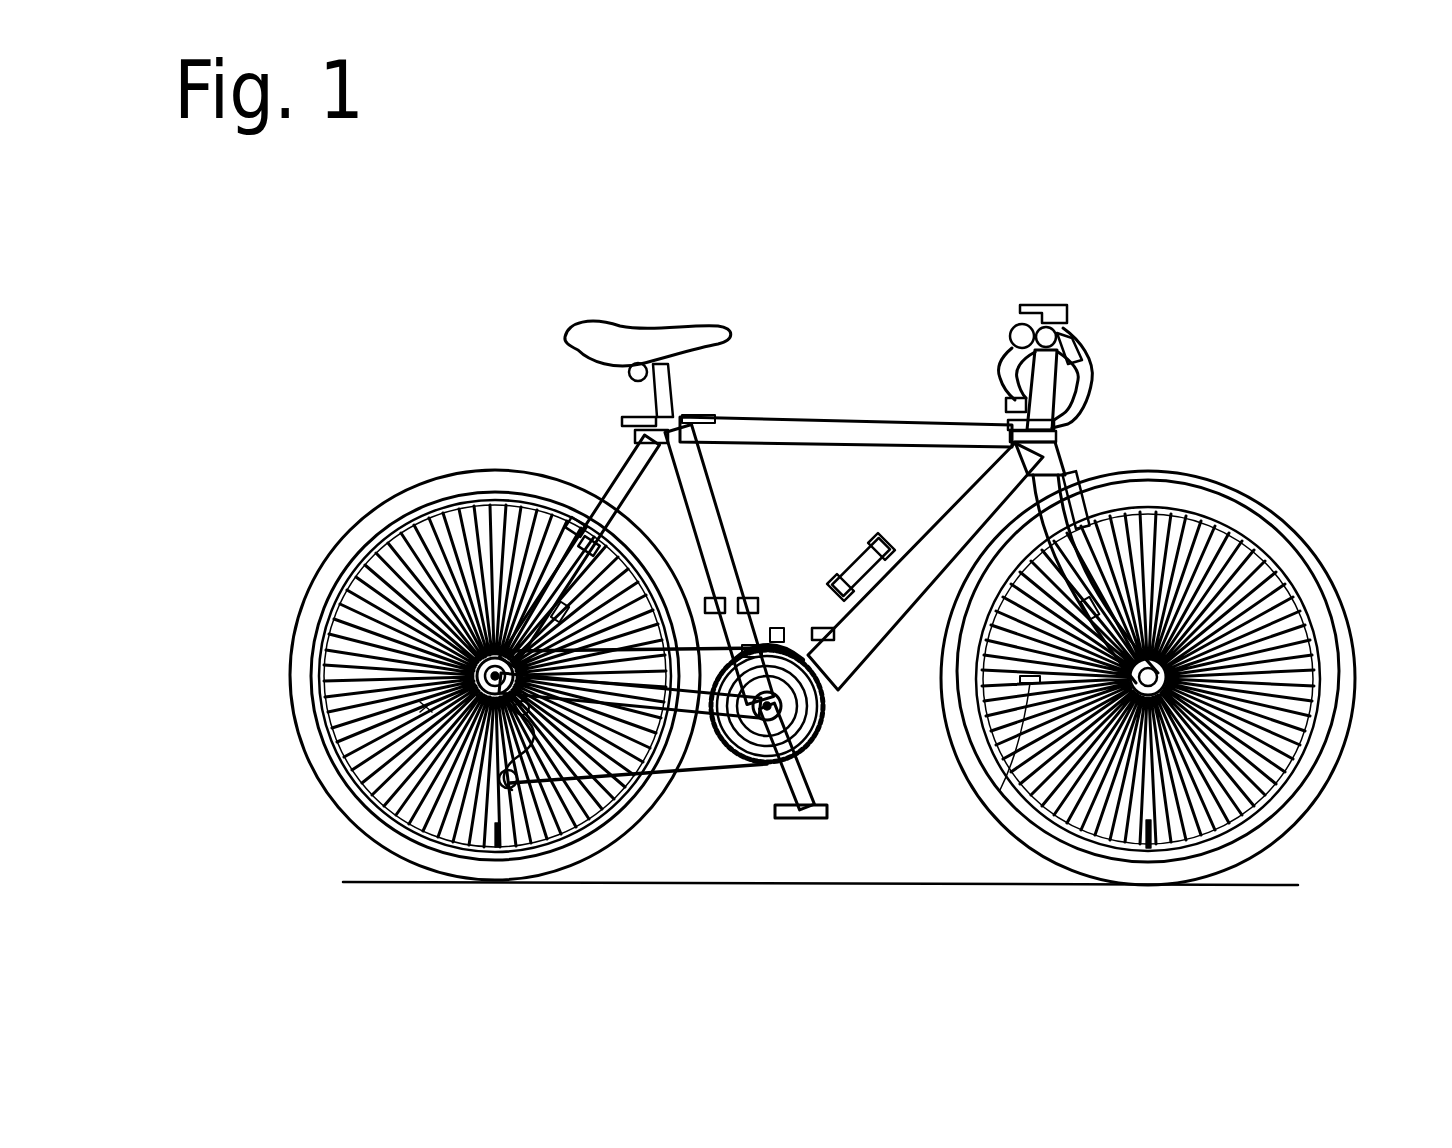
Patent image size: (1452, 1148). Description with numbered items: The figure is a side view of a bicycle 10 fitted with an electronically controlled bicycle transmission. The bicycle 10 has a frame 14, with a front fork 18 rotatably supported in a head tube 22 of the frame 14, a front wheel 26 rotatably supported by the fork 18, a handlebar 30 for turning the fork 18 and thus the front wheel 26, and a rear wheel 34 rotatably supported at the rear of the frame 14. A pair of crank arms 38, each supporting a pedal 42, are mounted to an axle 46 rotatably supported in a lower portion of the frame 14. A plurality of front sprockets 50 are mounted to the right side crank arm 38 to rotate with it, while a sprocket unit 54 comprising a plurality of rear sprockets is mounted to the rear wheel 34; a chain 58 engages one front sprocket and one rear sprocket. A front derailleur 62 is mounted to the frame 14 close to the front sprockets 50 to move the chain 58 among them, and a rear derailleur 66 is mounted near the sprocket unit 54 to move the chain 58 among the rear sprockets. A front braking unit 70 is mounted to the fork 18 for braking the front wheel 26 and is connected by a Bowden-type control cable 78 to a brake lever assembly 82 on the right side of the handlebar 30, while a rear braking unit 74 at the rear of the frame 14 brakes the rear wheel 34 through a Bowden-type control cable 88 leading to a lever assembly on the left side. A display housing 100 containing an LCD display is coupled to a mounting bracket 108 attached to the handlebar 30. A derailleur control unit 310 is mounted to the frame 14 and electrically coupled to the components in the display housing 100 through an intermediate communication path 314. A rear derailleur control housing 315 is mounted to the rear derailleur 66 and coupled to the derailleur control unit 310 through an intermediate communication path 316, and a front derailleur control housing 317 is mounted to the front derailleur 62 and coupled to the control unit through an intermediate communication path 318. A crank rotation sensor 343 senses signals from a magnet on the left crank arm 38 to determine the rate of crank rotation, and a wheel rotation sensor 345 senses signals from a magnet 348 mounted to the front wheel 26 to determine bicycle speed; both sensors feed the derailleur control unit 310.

The bicycle 10 is at (721, 175).
The frame 14 is at (808, 418).
The front fork 18 is at (1078, 488).
The head tube 22 is at (1003, 403).
The front wheel 26 is at (1330, 585).
The handlebar 30 is at (1010, 333).
The rear wheel 34 is at (340, 550).
The crank arm 38 is at (800, 775).
The pedal 42 is at (793, 820).
The axle 46 is at (780, 708).
The front sprockets 50 is at (822, 690).
The sprocket unit 54 is at (337, 632).
The chain 58 is at (705, 778).
The front derailleur 62 is at (770, 640).
The rear derailleur 66 is at (315, 714).
The front braking unit 70 is at (1095, 520).
The rear braking unit 74 is at (567, 500).
The Bowden-type control cable 78 is at (1055, 452).
The brake lever assembly 82 is at (1086, 345).
The Bowden-type control cable 88 is at (630, 463).
The display housing 100 is at (1049, 305).
The mounting bracket 108 is at (1068, 313).
The derailleur control unit 310 is at (870, 553).
The intermediate communication path 314 is at (937, 520).
The rear derailleur control housing 315 is at (390, 813).
The intermediate communication path 316 is at (823, 628).
The front derailleur control housing 317 is at (778, 630).
The intermediate communication path 318 is at (752, 651).
The crank rotation sensor 343 is at (575, 605).
The wheel rotation sensor 345 is at (1090, 605).
The magnet 348 is at (1000, 790).